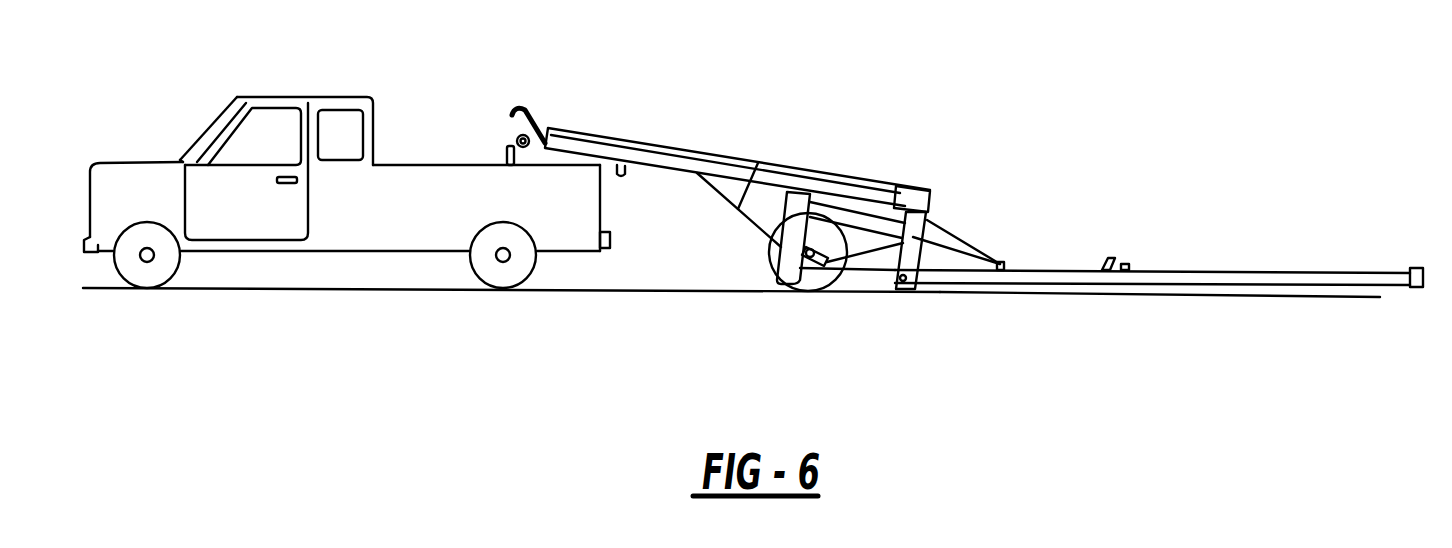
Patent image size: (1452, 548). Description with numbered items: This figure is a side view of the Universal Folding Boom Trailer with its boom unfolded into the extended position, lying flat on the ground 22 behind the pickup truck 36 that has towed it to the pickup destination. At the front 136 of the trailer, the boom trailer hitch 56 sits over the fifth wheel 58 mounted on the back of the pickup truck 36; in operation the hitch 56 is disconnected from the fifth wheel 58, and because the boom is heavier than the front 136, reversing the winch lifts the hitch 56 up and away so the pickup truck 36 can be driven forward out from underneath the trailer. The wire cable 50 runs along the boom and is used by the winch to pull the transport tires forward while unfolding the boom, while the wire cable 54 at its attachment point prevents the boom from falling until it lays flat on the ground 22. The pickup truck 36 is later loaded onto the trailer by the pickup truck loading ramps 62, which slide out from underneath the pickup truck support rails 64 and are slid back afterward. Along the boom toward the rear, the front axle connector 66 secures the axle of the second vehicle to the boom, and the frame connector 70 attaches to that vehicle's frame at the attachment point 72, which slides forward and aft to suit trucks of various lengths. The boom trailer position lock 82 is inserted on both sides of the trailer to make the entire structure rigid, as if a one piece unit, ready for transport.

The ground 22 is at (517, 369).
The pickup truck 36 is at (147, 160).
The wire cable 50 is at (763, 172).
The wire cable 54 is at (942, 253).
The boom trailer hitch 56 is at (531, 116).
The fifth wheel 58 is at (507, 143).
The pickup truck loading ramps 62 is at (927, 200).
The pickup truck support rails 64 is at (882, 198).
The front axle connector 66 is at (1110, 262).
The frame connector 70 is at (1410, 267).
The attachment point 72 is at (1412, 290).
The boom trailer position lock 82 is at (790, 292).
The front 136 is at (626, 138).